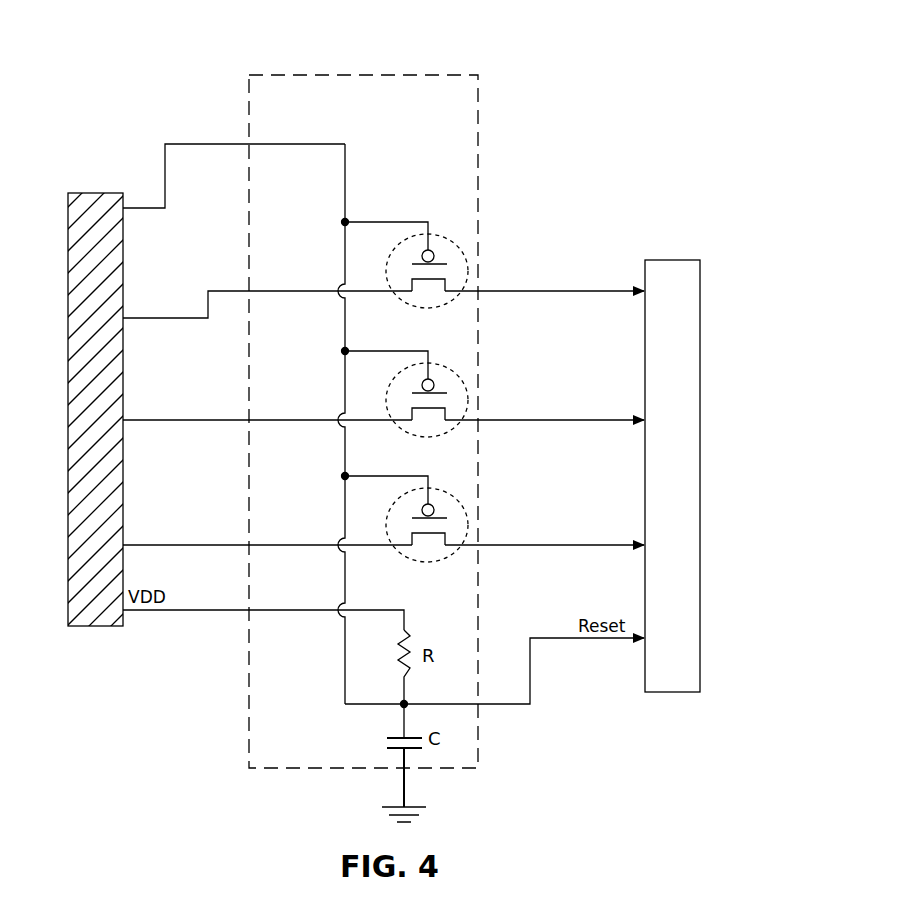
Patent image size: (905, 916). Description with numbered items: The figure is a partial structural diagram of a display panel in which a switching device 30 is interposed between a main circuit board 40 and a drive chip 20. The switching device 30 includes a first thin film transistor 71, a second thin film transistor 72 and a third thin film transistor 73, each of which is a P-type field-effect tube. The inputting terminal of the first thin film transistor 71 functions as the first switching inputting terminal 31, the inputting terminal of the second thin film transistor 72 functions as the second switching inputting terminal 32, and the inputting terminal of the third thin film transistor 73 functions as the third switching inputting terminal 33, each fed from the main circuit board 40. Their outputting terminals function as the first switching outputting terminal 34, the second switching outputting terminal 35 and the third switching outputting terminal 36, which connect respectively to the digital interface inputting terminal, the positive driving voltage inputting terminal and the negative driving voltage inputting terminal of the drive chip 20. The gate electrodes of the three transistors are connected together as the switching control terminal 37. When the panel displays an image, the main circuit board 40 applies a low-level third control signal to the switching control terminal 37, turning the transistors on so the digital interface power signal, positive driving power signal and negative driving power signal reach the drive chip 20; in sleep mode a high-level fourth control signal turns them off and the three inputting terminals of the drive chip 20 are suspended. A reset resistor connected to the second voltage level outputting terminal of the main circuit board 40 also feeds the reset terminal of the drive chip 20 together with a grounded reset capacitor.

The drive chip 20 is at (668, 260).
The switching device 30 is at (484, 75).
The first switching inputting terminal 31 is at (267, 290).
The second switching inputting terminal 32 is at (267, 404).
The third switching inputting terminal 33 is at (267, 530).
The first switching outputting terminal 34 is at (544, 278).
The second switching outputting terminal 35 is at (544, 407).
The third switching outputting terminal 36 is at (544, 532).
The switching control terminal 37 is at (234, 161).
The main circuit board 40 is at (100, 626).
The first thin film transistor 71 is at (462, 246).
The second thin film transistor 72 is at (462, 375).
The third thin film transistor 73 is at (462, 500).